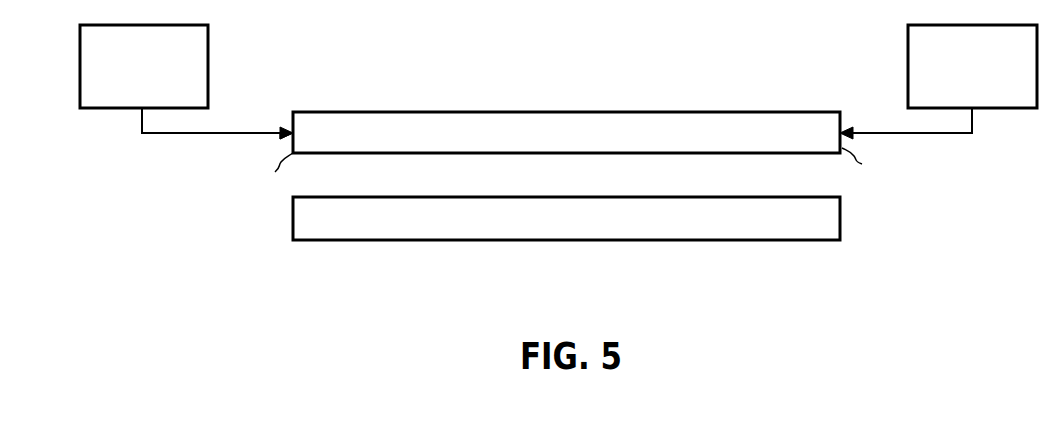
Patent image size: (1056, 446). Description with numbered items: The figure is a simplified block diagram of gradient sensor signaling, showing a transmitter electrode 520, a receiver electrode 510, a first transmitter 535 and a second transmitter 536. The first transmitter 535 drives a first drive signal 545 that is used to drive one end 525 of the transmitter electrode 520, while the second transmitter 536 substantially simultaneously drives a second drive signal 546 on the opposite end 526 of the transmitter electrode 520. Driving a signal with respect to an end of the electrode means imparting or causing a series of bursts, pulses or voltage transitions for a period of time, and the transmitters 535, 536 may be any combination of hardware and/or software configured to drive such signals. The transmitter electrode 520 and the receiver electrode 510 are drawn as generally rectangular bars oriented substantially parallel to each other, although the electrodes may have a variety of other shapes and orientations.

The receiver electrode 510 is at (587, 232).
The transmitter electrode 520 is at (587, 146).
The end of transmitter electrode 525 is at (261, 173).
The end of transmitter electrode 526 is at (874, 168).
The first transmitter 535 is at (122, 77).
The second transmitter 536 is at (951, 77).
The first drive signal 545 is at (185, 133).
The second drive signal 546 is at (948, 133).